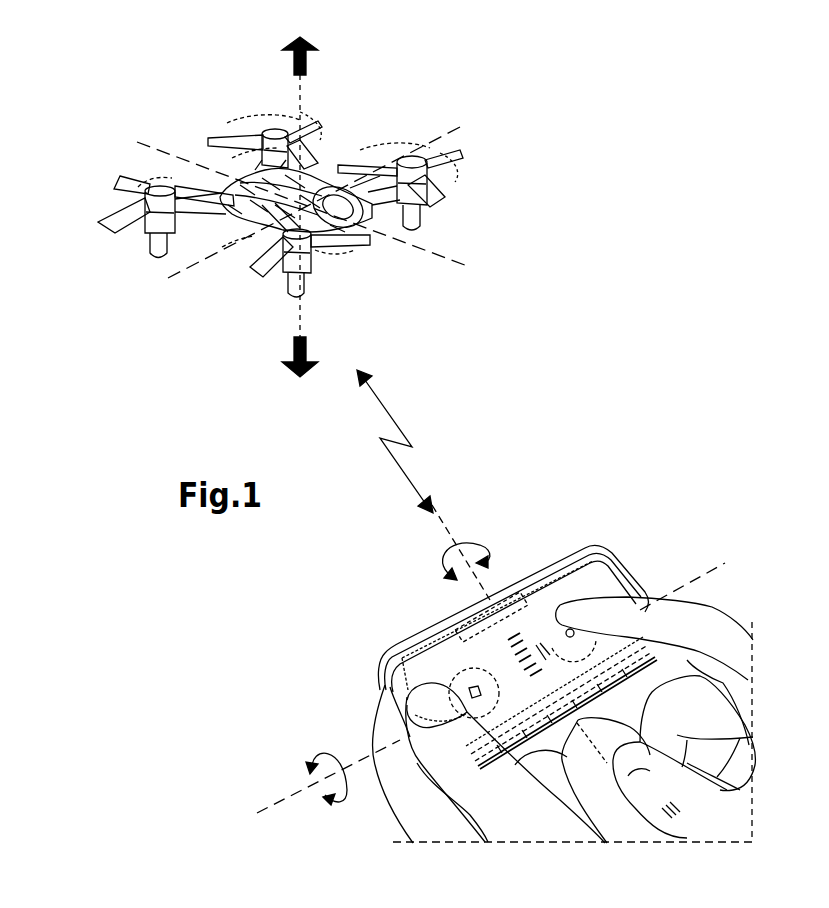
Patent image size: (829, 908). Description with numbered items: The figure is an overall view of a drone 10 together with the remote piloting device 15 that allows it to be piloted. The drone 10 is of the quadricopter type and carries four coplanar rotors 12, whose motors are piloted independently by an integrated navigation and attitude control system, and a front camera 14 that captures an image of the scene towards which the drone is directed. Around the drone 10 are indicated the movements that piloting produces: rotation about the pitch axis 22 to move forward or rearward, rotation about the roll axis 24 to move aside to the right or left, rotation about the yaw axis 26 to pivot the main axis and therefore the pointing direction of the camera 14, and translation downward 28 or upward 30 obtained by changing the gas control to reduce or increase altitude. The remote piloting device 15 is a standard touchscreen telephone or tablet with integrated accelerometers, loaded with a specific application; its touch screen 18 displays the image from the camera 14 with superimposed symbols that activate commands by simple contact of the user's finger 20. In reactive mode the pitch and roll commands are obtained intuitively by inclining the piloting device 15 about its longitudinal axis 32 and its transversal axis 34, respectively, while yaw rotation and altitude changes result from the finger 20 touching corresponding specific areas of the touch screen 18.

The drone 10 is at (436, 115).
The rotors 12 is at (113, 200).
The front camera 14 is at (410, 220).
The remote piloting device 15 is at (597, 534).
The touch screen 18 is at (453, 647).
The finger 20 is at (653, 613).
The pitch axis 22 is at (200, 258).
The roll axis 24 is at (450, 258).
The yaw axis 26 is at (303, 87).
The translation downward 28 is at (318, 356).
The translation upward 30 is at (318, 52).
The longitudinal axis 32 is at (280, 805).
The transversal axis 34 is at (450, 530).